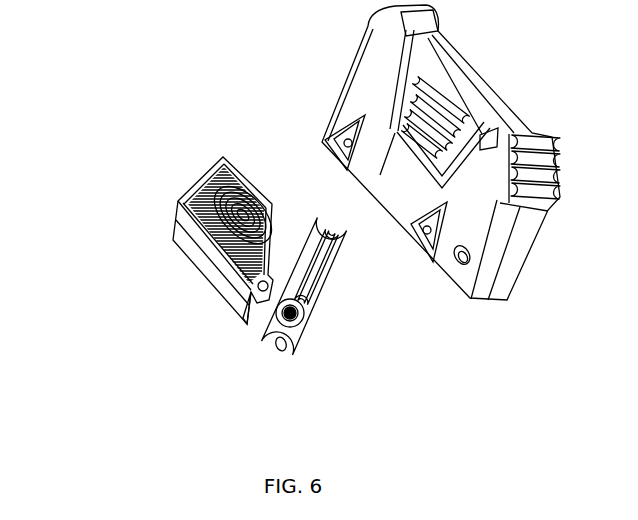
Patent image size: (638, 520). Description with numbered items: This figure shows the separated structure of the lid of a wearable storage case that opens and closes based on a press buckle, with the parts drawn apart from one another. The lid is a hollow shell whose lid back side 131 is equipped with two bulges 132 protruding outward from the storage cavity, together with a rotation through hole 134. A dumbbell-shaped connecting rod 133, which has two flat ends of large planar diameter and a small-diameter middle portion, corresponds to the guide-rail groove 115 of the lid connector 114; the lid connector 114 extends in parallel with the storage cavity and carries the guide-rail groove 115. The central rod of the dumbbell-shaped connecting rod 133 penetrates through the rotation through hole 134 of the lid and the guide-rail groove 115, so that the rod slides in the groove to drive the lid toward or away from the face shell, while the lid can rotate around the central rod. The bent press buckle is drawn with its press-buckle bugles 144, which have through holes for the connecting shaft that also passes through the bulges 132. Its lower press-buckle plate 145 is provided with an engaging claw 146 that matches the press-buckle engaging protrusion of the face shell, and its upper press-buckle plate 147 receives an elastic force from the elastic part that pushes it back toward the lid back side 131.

The lid back side 131 is at (378, 60).
The bulges 132 is at (323, 130).
The rotation through hole 134 is at (466, 265).
The lower press-buckle plate 145 is at (203, 250).
The upper press-buckle plate 147 is at (178, 194).
The press-buckle bugles 144 is at (238, 285).
The engaging claw 146 is at (250, 322).
The dumbbell-shaped connecting rod 133 is at (242, 305).
The lid connector 114 is at (335, 282).
The guide-rail groove 115 is at (318, 308).